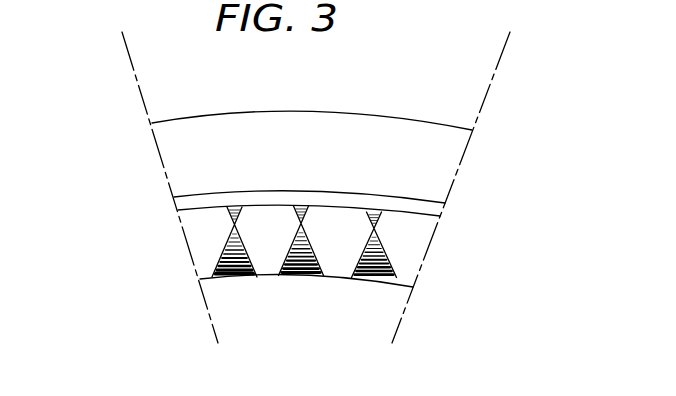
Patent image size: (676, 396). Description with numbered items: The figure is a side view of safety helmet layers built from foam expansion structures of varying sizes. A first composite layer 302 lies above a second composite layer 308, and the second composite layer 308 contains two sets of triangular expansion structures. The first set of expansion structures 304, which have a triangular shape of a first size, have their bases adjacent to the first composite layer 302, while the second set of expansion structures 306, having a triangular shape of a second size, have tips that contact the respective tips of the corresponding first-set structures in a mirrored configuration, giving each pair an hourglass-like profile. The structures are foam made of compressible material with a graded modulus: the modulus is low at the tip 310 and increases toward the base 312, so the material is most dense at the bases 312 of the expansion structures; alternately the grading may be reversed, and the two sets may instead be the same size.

The first composite layer 302 is at (151, 122).
The first set of expansion structures 304 is at (407, 225).
The second set of expansion structures 306 is at (402, 268).
The second composite layer 308 is at (177, 208).
The tip 310 is at (236, 254).
The base 312 is at (255, 271).